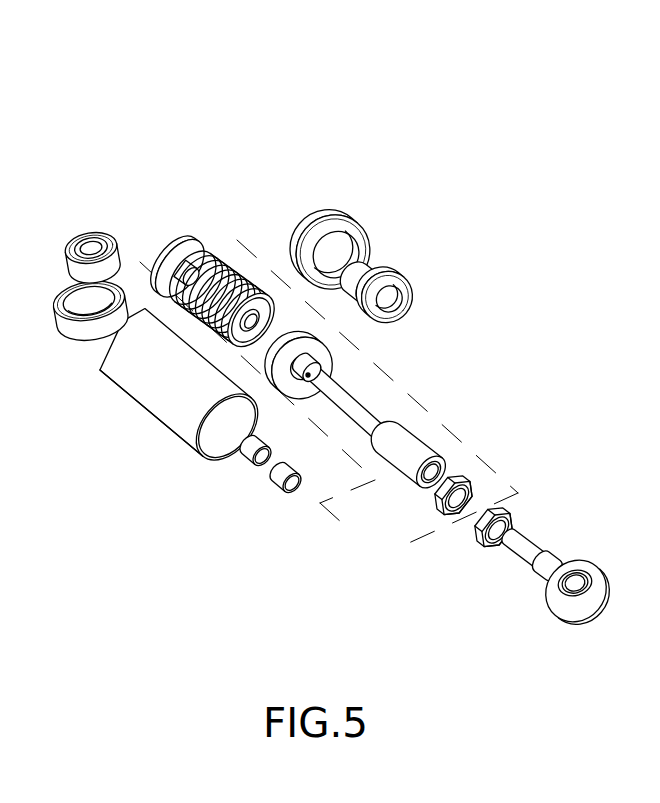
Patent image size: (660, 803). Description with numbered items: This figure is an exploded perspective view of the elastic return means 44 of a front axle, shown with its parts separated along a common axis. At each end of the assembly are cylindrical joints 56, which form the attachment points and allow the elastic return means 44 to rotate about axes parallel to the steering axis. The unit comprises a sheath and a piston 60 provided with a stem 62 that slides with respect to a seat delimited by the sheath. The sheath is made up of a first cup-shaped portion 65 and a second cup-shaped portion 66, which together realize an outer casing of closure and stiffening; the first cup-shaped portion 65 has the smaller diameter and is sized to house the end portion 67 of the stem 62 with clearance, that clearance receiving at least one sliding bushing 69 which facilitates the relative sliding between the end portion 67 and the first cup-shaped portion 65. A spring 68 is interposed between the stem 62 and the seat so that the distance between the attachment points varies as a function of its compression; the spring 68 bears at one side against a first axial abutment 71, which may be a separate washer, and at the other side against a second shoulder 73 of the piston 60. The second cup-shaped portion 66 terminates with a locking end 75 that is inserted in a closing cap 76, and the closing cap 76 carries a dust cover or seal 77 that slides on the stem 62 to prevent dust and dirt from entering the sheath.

The elastic return means 44 is at (237, 112).
The cylindrical joints 56 is at (73, 233).
The piston 60 is at (427, 444).
The stem 62 is at (363, 410).
The first cup-shaped portion 65 is at (90, 330).
The second cup-shaped portion 66 is at (155, 387).
The end portion of the stem 67 is at (308, 377).
The spring 68 is at (223, 232).
The sliding bushing 69 is at (247, 462).
The first axial abutment 71 is at (178, 232).
The second shoulder 73 is at (296, 342).
The locking end 75 is at (178, 450).
The closing cap 76 is at (332, 213).
The dust cover or seal 77 is at (395, 270).